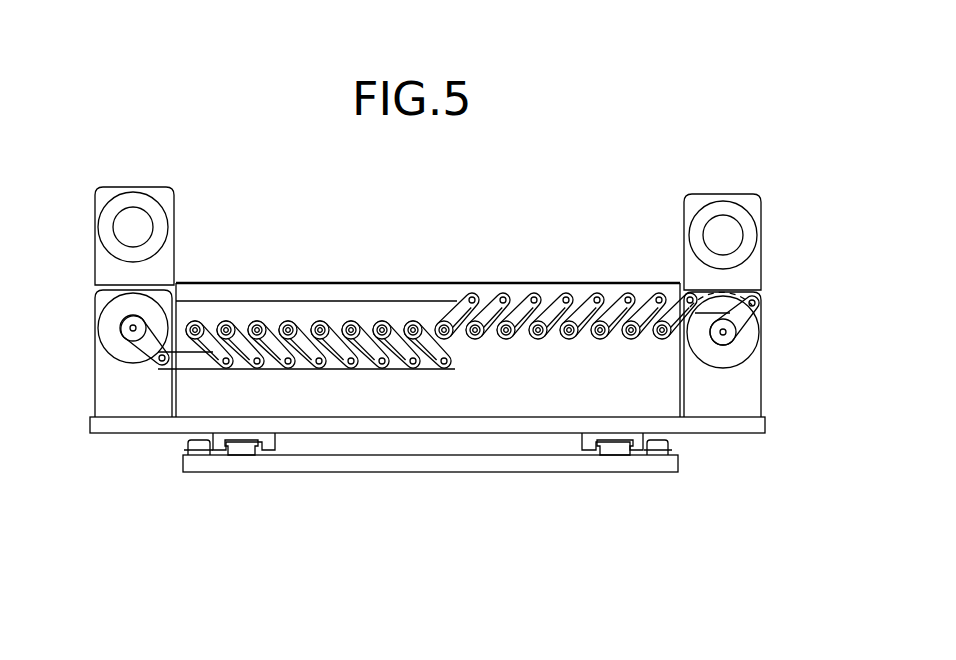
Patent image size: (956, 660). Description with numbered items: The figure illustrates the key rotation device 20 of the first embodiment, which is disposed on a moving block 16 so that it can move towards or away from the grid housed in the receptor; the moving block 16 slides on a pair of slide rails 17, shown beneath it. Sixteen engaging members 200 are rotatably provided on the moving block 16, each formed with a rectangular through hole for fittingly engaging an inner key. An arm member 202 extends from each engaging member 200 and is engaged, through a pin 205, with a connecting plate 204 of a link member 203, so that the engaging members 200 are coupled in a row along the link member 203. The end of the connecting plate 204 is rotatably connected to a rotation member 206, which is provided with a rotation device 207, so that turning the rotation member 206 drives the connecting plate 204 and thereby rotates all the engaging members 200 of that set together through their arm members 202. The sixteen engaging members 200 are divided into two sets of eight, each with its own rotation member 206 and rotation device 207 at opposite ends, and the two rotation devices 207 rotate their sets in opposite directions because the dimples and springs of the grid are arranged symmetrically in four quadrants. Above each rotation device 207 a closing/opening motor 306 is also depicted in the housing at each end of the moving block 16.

The moving block 16 is at (151, 440).
The slide rails 17 is at (242, 450).
The key rotation device 20 is at (513, 258).
The engaging member 200 is at (257, 322).
The arm member 202 is at (300, 340).
The link member 203 is at (441, 293).
The connecting plate 204 is at (333, 365).
The pin 205 is at (213, 365).
The rotation member 206 is at (150, 338).
The rotation device 207 is at (108, 362).
The closing/opening motor 306 is at (160, 215).